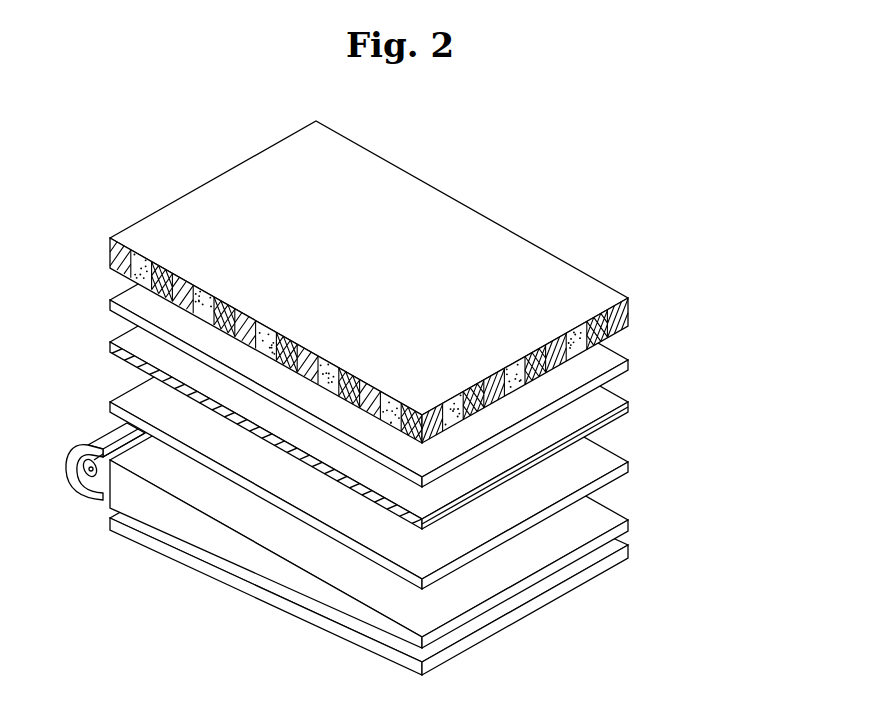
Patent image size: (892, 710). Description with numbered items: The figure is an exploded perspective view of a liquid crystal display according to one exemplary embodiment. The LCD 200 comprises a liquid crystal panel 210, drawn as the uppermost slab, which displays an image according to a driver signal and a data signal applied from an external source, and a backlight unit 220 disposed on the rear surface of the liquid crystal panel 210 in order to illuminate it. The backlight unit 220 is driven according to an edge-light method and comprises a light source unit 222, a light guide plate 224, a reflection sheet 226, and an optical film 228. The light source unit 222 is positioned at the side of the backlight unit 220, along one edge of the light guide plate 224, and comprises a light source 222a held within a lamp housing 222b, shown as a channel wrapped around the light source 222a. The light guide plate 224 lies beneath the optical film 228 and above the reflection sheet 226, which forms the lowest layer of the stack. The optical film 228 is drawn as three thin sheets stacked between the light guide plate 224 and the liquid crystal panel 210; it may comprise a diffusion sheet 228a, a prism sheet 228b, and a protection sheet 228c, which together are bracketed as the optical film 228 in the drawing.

The LCD 200 is at (403, 391).
The liquid crystal panel 210 is at (534, 244).
The backlight unit 220 is at (403, 509).
The light source unit 222 is at (81, 521).
The light source 222a is at (89, 478).
The lamp housing 222b is at (71, 452).
The light guide plate 224 is at (600, 506).
The reflection sheet 226 is at (617, 547).
The optical film 228 is at (450, 386).
The diffusion sheet 228a is at (600, 447).
The prism sheet 228b is at (600, 392).
The protection sheet 228c is at (600, 346).